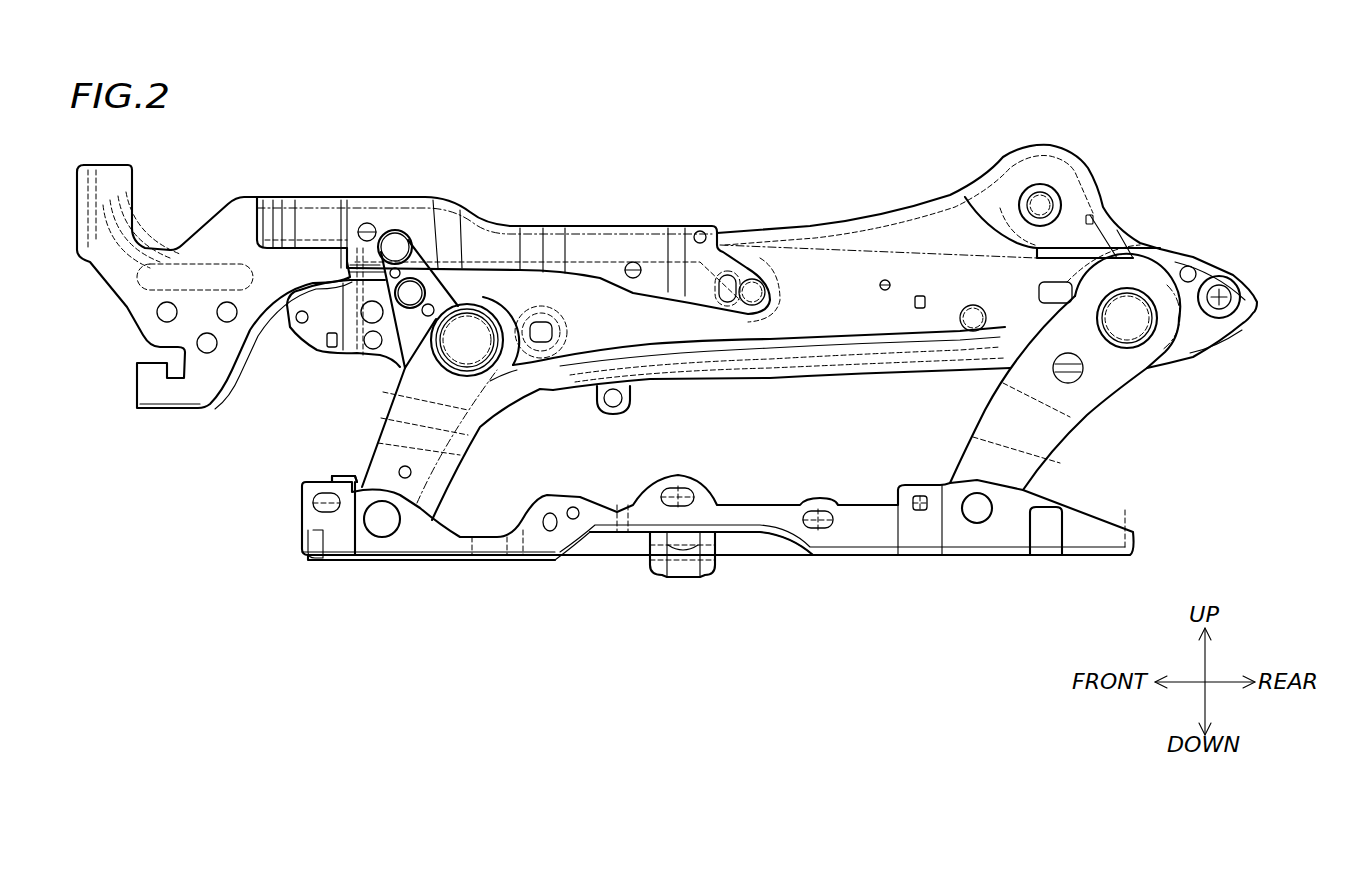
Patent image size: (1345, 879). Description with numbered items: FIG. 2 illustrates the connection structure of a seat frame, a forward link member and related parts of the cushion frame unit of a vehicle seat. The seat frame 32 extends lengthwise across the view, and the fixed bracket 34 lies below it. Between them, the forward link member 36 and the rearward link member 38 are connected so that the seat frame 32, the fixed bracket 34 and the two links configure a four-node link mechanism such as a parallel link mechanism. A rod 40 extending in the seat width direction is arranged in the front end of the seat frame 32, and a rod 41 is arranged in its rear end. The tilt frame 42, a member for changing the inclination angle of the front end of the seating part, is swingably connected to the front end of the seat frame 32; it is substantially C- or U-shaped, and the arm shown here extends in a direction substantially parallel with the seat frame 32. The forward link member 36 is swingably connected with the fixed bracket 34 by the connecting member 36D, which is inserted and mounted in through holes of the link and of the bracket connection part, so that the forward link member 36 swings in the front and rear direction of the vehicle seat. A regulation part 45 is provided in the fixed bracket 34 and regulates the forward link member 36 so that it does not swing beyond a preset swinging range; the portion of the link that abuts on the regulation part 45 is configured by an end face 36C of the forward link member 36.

The seat frame 32 is at (835, 222).
The fixed bracket 34 is at (772, 503).
The forward link member 36 is at (648, 427).
The end face 36C is at (367, 452).
The connecting member 36D is at (383, 523).
The rearward link member 38 is at (1087, 413).
The rod 40 is at (458, 335).
The rod 41 is at (1128, 312).
The tilt frame 42 is at (492, 216).
The regulation part 45 is at (337, 475).